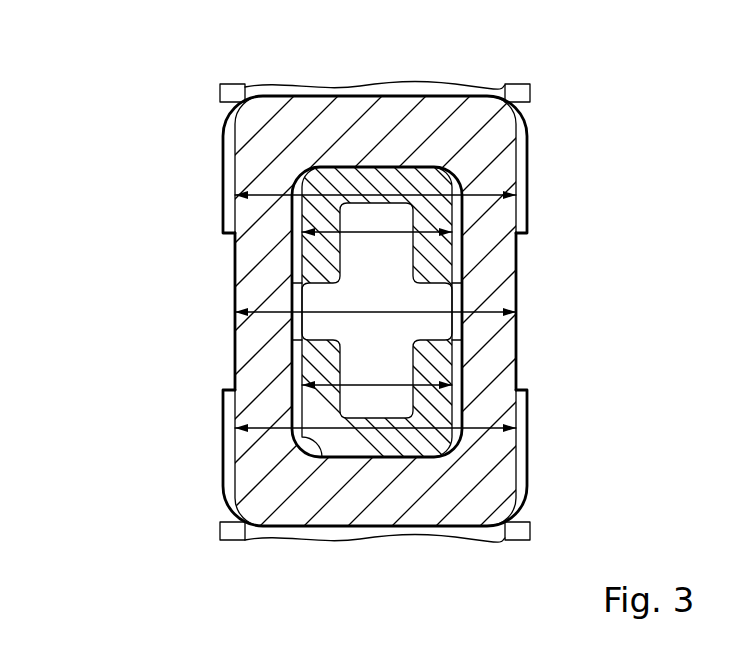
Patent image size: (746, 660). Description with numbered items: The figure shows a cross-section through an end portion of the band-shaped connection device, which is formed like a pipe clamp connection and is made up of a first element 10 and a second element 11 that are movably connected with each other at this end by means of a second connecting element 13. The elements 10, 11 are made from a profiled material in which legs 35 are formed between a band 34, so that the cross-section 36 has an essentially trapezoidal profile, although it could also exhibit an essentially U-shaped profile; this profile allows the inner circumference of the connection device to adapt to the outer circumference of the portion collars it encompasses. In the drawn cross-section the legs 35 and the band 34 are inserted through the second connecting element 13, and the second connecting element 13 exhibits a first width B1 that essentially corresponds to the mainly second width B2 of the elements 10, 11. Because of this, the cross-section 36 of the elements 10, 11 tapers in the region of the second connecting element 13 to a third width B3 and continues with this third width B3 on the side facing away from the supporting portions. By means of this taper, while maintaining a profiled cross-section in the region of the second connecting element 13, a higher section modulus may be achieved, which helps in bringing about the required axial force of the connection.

The first element 10 is at (540, 162).
The second element 11 is at (540, 445).
The second connecting element 13 is at (530, 288).
The band 34 is at (371, 180).
The legs 35 is at (318, 258).
The cross-section 36 is at (273, 198).
The first width B1 is at (280, 317).
The second width B2 is at (282, 432).
The third width B3 is at (374, 383).